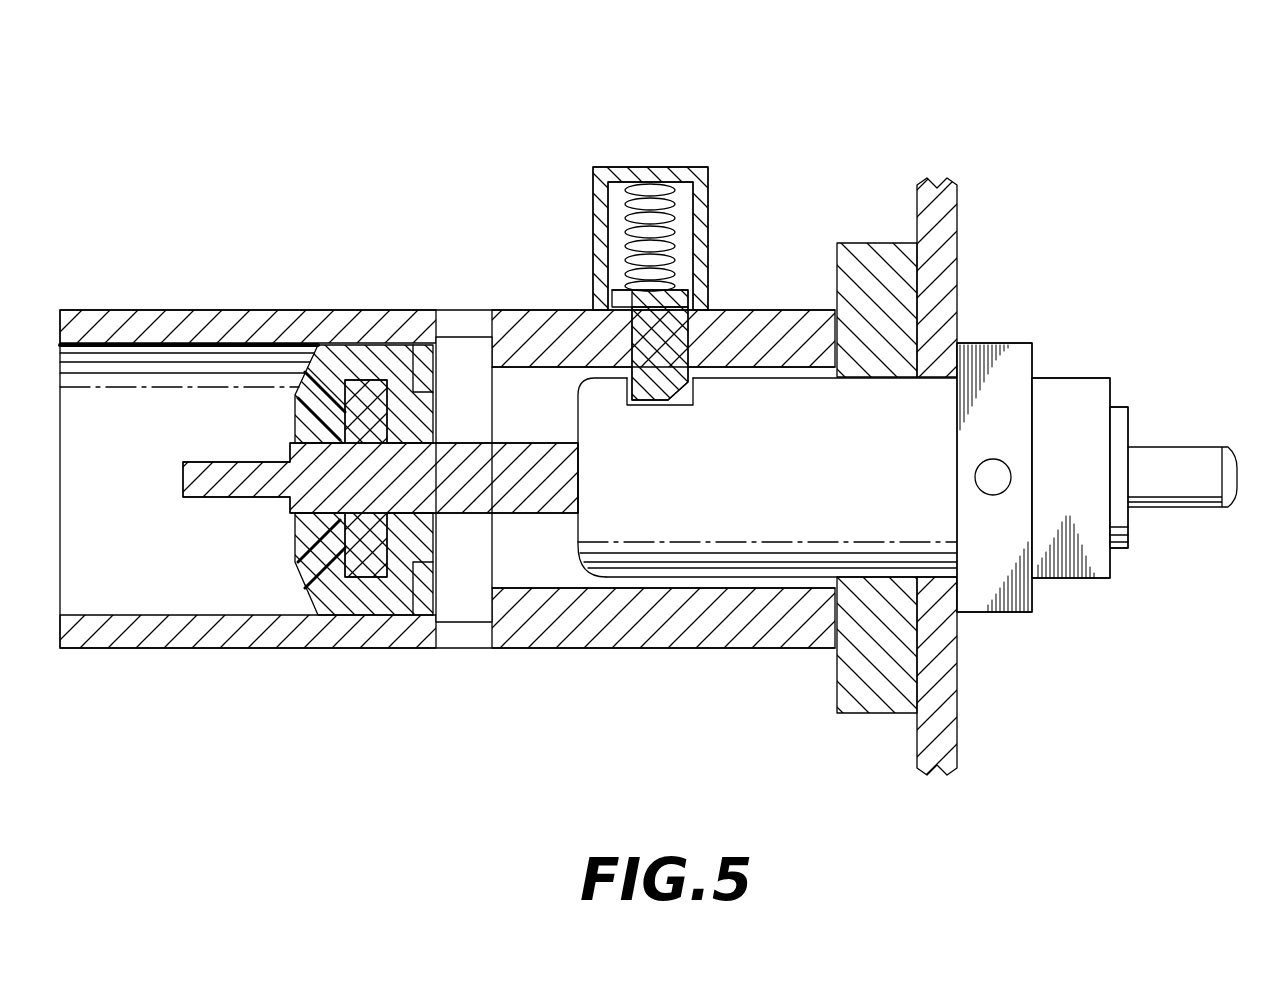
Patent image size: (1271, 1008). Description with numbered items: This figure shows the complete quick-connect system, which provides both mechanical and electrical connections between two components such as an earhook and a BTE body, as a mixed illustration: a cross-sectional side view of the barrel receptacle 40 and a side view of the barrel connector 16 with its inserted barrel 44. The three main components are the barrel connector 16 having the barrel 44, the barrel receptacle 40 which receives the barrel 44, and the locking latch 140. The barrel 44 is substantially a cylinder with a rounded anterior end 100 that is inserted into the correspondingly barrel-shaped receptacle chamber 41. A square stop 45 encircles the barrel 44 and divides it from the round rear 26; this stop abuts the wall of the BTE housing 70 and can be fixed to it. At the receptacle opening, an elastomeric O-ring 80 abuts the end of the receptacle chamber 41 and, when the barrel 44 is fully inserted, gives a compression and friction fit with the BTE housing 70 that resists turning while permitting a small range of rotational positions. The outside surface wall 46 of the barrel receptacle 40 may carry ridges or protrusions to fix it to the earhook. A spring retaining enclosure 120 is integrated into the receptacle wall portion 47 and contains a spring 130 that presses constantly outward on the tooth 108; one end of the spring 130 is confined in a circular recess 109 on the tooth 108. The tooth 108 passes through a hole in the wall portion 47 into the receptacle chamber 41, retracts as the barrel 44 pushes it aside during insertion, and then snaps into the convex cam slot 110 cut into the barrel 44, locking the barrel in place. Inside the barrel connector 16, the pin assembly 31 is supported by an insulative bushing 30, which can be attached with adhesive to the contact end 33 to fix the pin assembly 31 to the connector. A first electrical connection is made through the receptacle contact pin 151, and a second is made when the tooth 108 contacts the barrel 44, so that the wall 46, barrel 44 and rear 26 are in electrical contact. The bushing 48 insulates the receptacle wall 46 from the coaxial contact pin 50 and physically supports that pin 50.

The barrel connector 16 is at (1078, 273).
The round rear 26 is at (1070, 378).
The insulative bushing 30 is at (1118, 418).
The pin assembly 31 is at (1192, 465).
The contact end 33 is at (1175, 480).
The barrel receptacle 40 is at (447, 385).
The receptacle chamber 41 is at (518, 547).
The barrel 44 is at (708, 424).
The square stop 45 is at (985, 343).
The outside surface wall 46 is at (395, 308).
The receptacle wall portion 47 is at (760, 330).
The bushing 48 is at (297, 413).
The coaxial contact pin 50 is at (407, 564).
The BTE housing 70 is at (947, 214).
The elastomeric O-ring 80 is at (866, 258).
The rounded anterior end 100 is at (583, 390).
The tooth 108 is at (650, 300).
The circular recess 109 is at (648, 302).
The cam slot 110 is at (677, 402).
The spring retaining enclosure 120 is at (615, 167).
The spring 130 is at (672, 203).
The locking latch 140 is at (715, 150).
The receptacle contact pin 151 is at (547, 483).